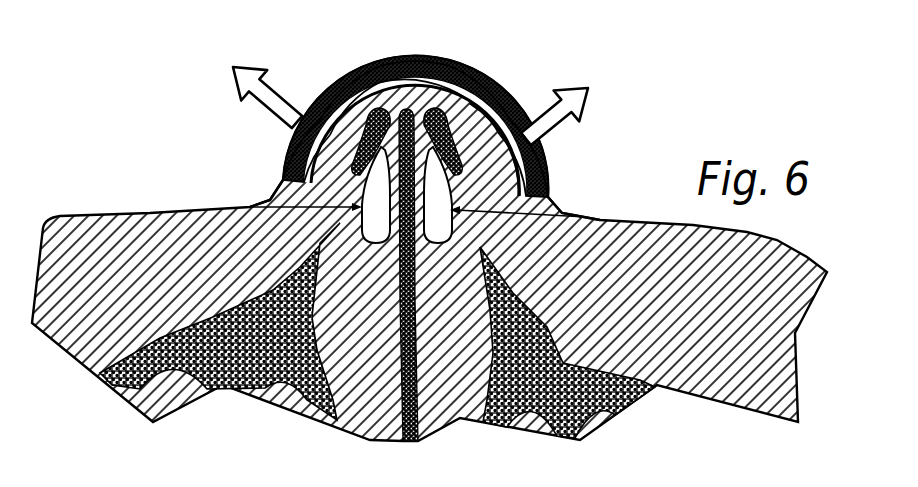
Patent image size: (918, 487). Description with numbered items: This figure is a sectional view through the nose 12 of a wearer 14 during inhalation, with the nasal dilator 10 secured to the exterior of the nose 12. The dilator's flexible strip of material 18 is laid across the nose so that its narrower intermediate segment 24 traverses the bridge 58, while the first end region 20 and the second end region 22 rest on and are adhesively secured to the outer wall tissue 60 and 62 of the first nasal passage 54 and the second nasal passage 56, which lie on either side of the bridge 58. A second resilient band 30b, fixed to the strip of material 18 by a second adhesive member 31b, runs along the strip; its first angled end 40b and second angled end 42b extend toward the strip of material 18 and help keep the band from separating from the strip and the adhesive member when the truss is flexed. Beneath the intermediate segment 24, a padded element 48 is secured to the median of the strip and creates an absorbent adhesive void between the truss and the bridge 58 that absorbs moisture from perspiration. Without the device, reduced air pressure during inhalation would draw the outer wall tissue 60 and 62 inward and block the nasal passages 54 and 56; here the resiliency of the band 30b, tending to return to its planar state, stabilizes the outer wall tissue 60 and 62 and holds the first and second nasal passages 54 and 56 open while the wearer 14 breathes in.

The nasal dilator 10 is at (505, 90).
The nose 12 is at (411, 99).
The wearer 14 is at (118, 205).
The flexible strip of material 18 is at (478, 98).
The first end region 20 is at (278, 188).
The second end region 22 is at (536, 187).
The intermediate segment 24 is at (452, 71).
The second resilient band 30b is at (348, 90).
The second adhesive member 31b is at (365, 70).
The first angled end 40b is at (285, 168).
The second angled end 42b is at (540, 168).
The padded element 48 is at (392, 67).
The first nasal passage 54 is at (265, 203).
The second nasal passage 56 is at (553, 213).
The bridge 58 is at (422, 67).
The outer wall tissue 60 is at (338, 138).
The outer wall tissue 62 is at (548, 147).